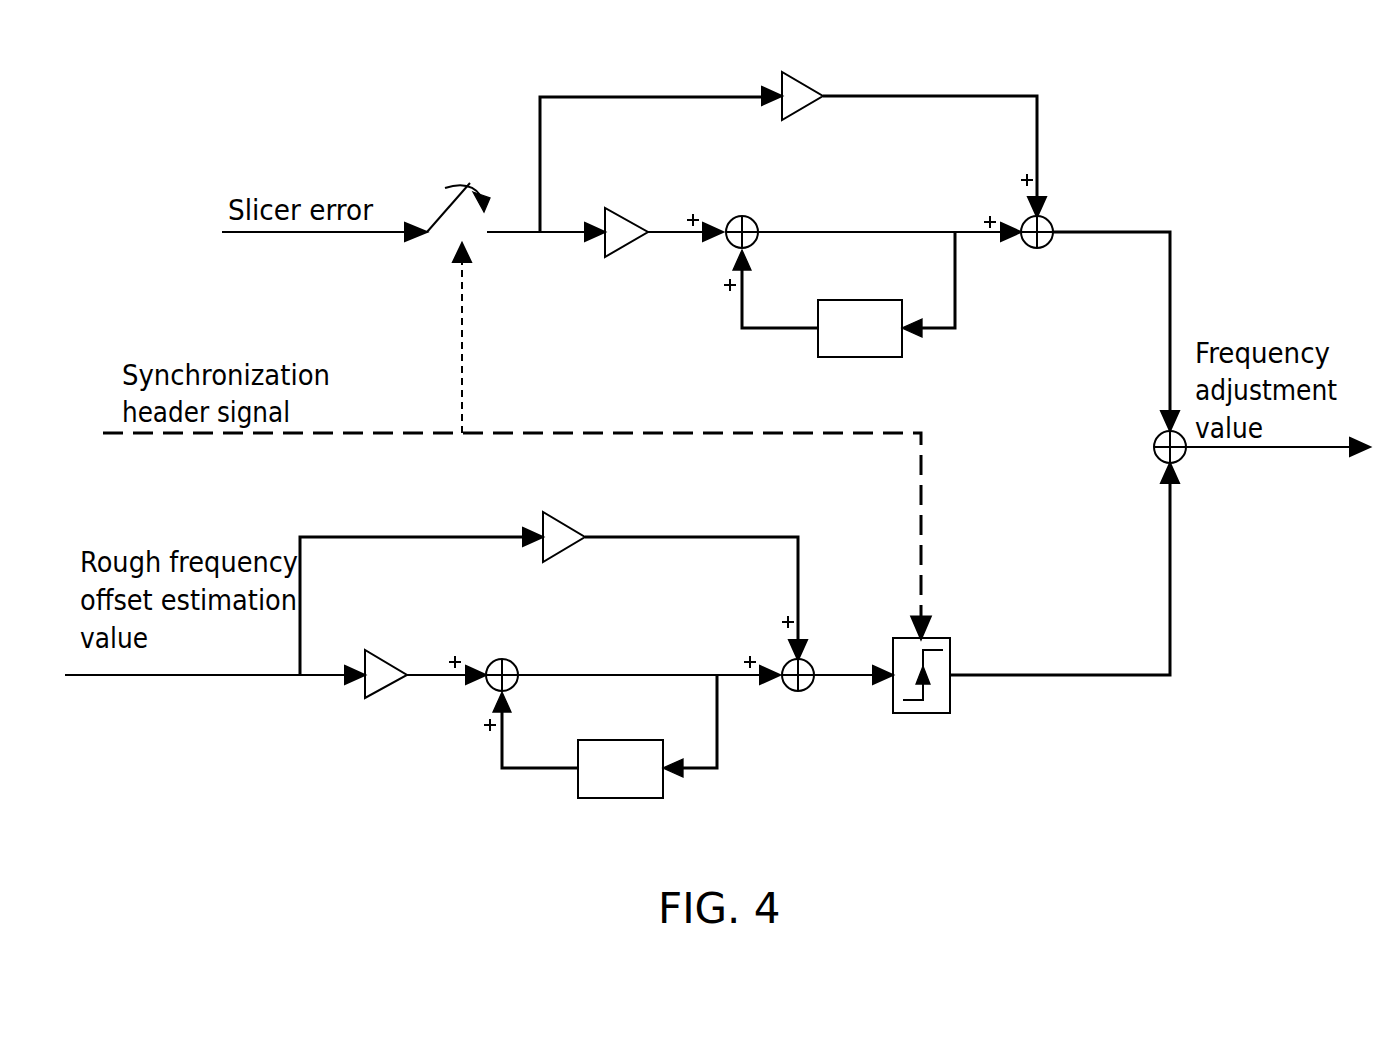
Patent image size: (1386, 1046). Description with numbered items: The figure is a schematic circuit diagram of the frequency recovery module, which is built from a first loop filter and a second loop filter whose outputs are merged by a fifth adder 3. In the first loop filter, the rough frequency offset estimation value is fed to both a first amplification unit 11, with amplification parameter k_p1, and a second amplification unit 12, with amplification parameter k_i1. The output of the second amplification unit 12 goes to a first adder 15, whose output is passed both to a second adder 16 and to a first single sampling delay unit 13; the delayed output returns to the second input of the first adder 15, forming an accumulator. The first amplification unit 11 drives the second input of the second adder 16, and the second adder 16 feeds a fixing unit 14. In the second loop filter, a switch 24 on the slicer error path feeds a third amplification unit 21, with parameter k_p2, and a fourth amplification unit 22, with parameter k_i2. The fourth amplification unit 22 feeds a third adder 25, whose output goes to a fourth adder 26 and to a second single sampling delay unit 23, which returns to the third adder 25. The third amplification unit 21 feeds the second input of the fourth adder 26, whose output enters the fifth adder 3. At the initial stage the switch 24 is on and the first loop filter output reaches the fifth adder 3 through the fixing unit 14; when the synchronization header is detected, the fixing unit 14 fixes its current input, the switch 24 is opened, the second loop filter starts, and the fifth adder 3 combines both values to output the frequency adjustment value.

The fifth adder 3 is at (1160, 435).
The first amplification unit 11 is at (560, 515).
The second amplification unit 12 is at (378, 650).
The first single sampling delay unit 13 is at (620, 798).
The fixing unit 14 is at (922, 713).
The first adder 15 is at (505, 660).
The second adder 16 is at (800, 692).
The third amplification unit 21 is at (800, 78).
The fourth amplification unit 22 is at (620, 208).
The second single sampling delay unit 23 is at (860, 357).
The switch 24 is at (436, 215).
The third adder 25 is at (742, 216).
The fourth adder 26 is at (1040, 249).